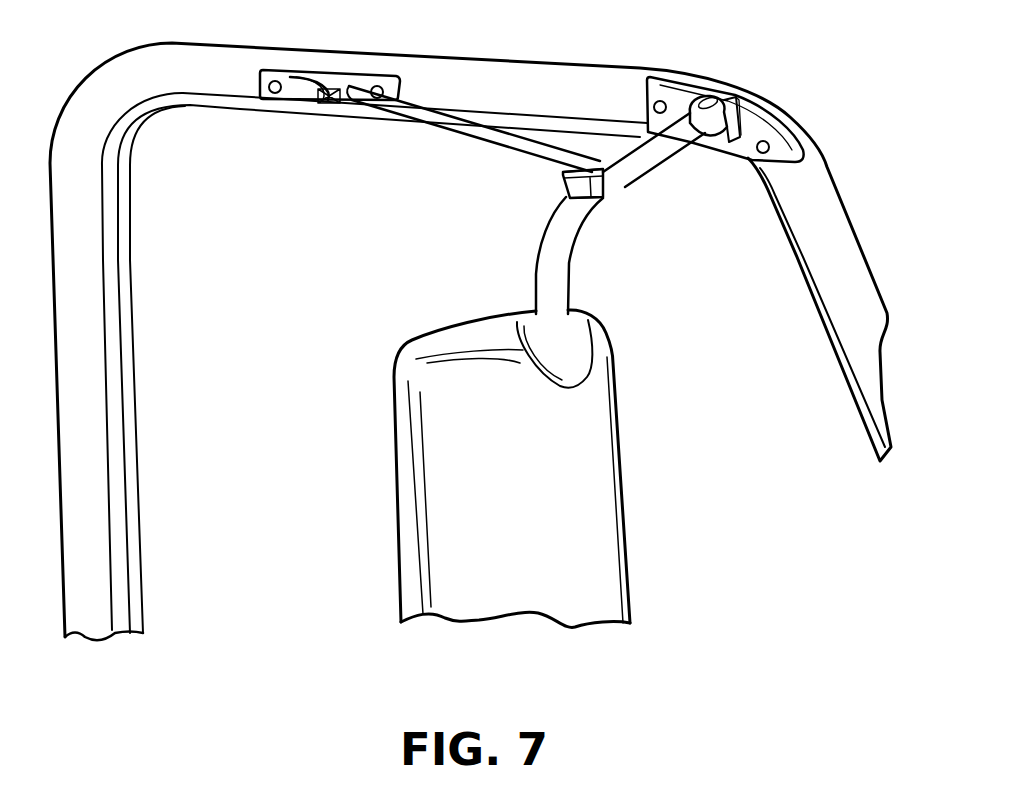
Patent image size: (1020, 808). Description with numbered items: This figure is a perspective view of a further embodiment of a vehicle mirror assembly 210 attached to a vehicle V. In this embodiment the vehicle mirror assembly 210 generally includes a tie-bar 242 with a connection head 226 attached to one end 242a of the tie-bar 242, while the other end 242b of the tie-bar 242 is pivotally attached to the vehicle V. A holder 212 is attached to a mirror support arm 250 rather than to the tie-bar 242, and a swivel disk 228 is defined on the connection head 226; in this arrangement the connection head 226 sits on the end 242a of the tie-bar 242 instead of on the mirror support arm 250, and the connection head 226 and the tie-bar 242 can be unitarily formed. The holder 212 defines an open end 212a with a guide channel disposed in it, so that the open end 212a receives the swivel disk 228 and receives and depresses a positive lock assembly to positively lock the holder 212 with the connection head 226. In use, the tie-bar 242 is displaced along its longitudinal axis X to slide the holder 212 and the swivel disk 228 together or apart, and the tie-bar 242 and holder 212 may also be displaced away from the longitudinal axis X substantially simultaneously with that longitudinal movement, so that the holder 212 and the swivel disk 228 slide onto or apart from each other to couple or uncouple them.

The vehicle V is at (100, 403).
The longitudinal axis X is at (320, 80).
The vehicle mirror assembly 210 is at (487, 392).
The holder 212 is at (557, 181).
The open end 212a is at (563, 172).
The connection head 226 is at (605, 176).
The swivel disk 228 is at (588, 200).
The tie-bar 242 is at (509, 102).
The one end of the tie-bar 242a is at (520, 137).
The other end of the tie-bar 242b is at (307, 90).
The mirror support arm 250 is at (590, 214).